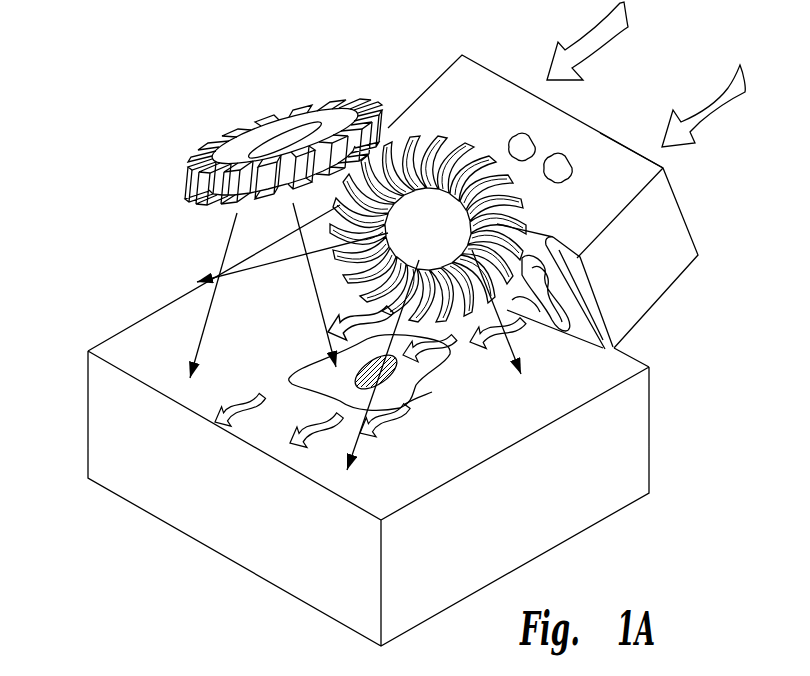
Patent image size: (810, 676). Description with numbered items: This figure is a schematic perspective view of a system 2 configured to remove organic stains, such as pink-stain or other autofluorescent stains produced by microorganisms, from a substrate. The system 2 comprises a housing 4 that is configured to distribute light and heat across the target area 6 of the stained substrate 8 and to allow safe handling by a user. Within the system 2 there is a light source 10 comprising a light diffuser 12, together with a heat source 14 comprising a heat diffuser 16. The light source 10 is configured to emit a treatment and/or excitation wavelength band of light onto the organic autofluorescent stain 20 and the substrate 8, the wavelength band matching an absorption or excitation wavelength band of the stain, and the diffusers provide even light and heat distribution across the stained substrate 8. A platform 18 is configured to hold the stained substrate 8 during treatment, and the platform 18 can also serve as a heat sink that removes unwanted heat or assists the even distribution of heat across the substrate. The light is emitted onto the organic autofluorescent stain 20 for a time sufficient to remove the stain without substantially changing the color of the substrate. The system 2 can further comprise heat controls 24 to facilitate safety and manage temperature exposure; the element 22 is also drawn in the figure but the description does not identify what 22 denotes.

The system 2 is at (383, 425).
The housing 4 is at (670, 248).
The target area 6 is at (400, 366).
The stained substrate 8 is at (415, 402).
The light source 10 is at (440, 147).
The light diffuser 12 is at (262, 202).
The heat source 14 is at (663, 168).
The heat diffuser 16 is at (543, 243).
The platform 18 is at (88, 351).
The organic autofluorescent stain 20 is at (297, 368).
The vapor cloud 22 is at (538, 132).
The heat controls 24 is at (570, 158).